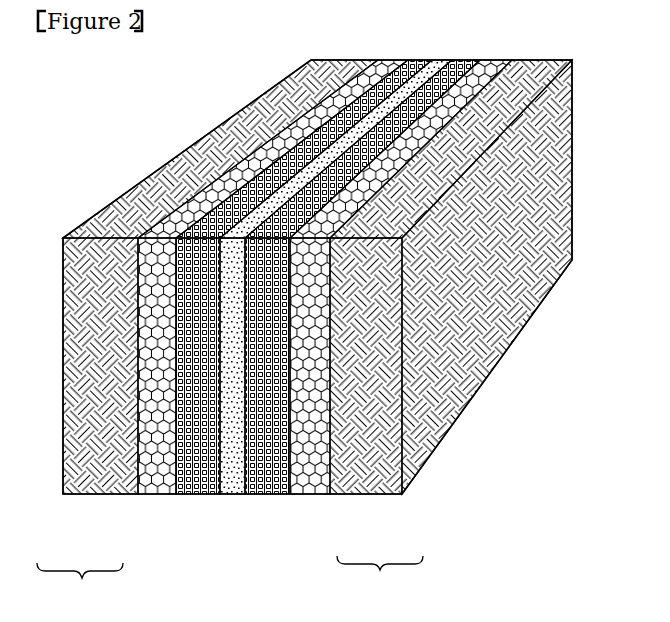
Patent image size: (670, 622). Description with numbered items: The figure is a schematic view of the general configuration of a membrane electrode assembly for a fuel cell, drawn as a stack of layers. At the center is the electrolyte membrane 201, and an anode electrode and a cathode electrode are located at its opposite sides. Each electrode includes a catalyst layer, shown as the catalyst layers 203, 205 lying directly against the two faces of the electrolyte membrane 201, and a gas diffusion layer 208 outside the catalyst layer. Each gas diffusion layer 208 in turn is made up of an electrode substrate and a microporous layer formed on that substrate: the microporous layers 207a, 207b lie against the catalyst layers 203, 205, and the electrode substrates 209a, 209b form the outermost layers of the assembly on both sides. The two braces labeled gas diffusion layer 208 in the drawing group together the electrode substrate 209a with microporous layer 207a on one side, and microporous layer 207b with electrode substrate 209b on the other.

The electrolyte membrane 201 is at (228, 495).
The catalyst layer 203 is at (197, 495).
The catalyst layer 205 is at (273, 495).
The microporous layer 207a is at (157, 495).
The microporous layer 207b is at (320, 495).
The electrode substrate 209a is at (90, 495).
The electrode substrate 209b is at (378, 495).
The gas diffusion layer 208 is at (230, 577).